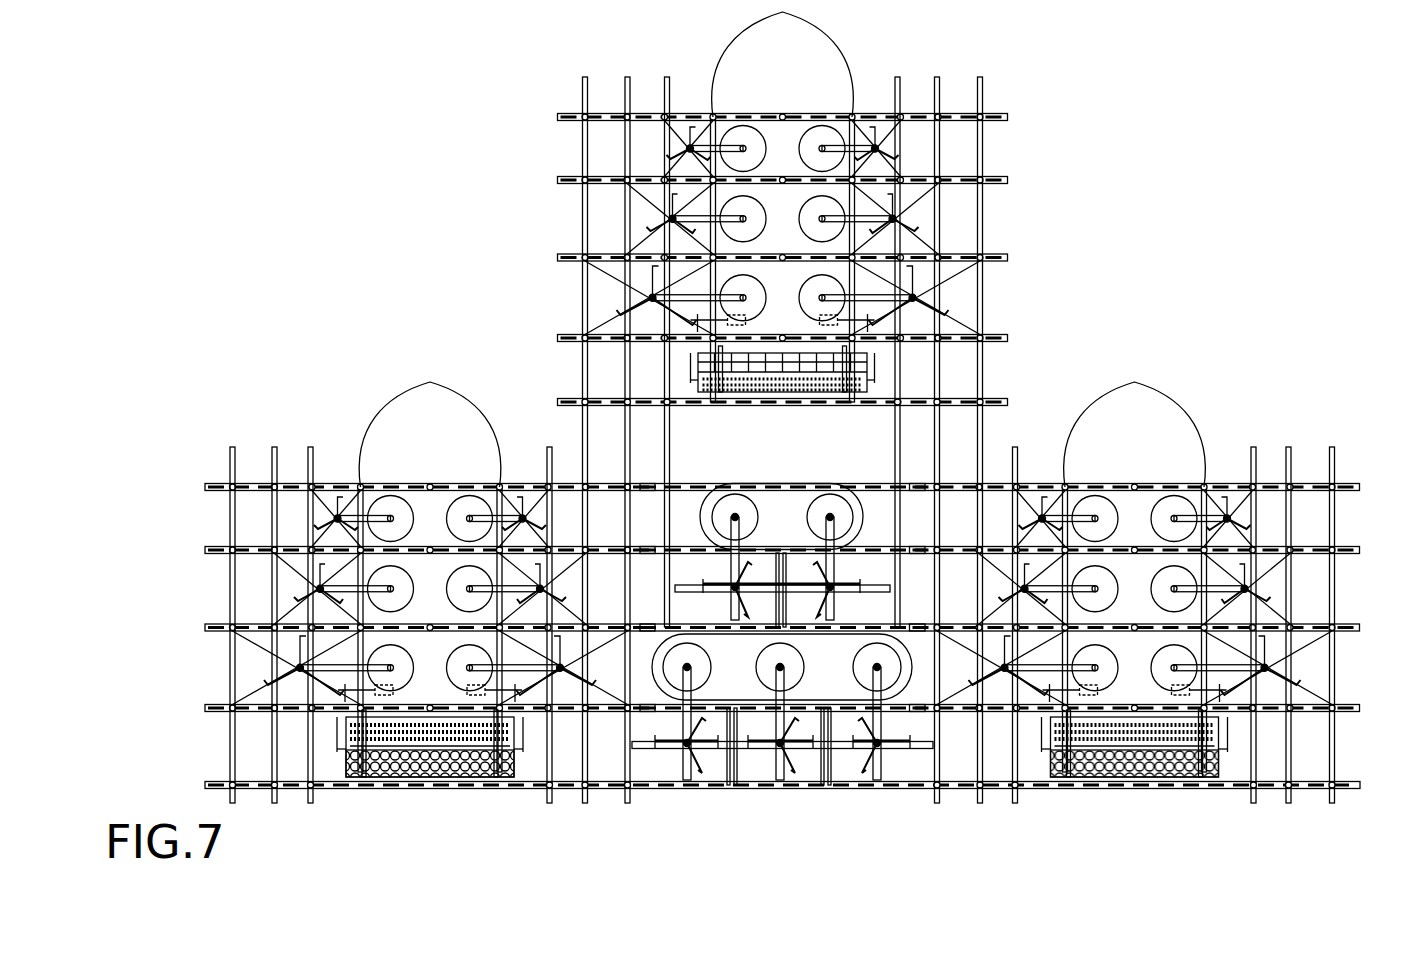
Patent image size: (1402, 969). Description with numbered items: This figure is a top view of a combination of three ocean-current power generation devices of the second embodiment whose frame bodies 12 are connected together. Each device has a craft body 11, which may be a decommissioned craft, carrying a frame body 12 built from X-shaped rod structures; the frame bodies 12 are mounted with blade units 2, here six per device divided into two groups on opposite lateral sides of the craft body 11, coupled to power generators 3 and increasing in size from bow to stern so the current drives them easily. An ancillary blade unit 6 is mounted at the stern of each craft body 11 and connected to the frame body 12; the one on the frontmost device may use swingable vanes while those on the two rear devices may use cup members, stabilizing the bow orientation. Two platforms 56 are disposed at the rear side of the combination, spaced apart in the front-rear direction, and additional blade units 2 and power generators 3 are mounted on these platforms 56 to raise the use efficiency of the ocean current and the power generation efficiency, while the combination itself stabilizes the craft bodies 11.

The blade unit 2 is at (717, 603).
The power generator 3 is at (723, 512).
The ancillary blade unit 6 is at (885, 380).
The craft body 11 is at (837, 54).
The frame body 12 is at (997, 86).
The platform 56 is at (803, 495).